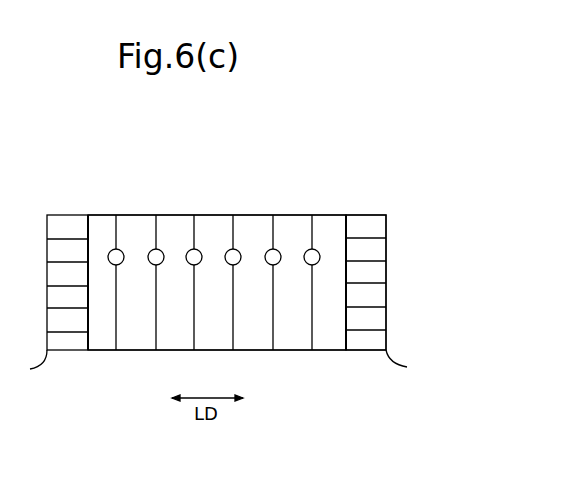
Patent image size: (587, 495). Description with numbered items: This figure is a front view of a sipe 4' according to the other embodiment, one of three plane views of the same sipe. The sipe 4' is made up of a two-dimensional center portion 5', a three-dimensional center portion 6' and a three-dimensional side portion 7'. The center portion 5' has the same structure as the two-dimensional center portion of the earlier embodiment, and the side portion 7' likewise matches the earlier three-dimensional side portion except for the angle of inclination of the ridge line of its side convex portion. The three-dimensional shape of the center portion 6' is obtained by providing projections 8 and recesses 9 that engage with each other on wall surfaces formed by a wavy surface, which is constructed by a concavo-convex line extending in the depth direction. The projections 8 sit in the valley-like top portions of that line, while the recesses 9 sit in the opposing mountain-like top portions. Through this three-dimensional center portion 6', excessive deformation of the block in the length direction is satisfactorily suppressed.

The sipe 4' is at (217, 254).
The 2D center portion 5' is at (218, 310).
The 3D center portion 6' is at (393, 282).
The 3D side portion 7' is at (217, 254).
The projection 8 is at (161, 251).
The recess 9 is at (110, 250).